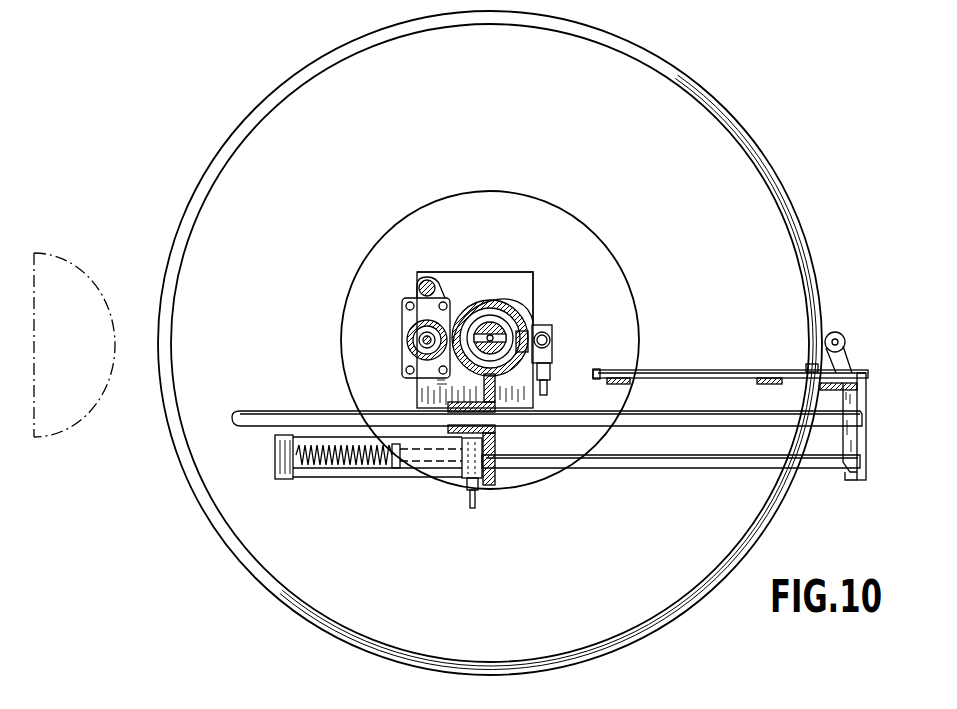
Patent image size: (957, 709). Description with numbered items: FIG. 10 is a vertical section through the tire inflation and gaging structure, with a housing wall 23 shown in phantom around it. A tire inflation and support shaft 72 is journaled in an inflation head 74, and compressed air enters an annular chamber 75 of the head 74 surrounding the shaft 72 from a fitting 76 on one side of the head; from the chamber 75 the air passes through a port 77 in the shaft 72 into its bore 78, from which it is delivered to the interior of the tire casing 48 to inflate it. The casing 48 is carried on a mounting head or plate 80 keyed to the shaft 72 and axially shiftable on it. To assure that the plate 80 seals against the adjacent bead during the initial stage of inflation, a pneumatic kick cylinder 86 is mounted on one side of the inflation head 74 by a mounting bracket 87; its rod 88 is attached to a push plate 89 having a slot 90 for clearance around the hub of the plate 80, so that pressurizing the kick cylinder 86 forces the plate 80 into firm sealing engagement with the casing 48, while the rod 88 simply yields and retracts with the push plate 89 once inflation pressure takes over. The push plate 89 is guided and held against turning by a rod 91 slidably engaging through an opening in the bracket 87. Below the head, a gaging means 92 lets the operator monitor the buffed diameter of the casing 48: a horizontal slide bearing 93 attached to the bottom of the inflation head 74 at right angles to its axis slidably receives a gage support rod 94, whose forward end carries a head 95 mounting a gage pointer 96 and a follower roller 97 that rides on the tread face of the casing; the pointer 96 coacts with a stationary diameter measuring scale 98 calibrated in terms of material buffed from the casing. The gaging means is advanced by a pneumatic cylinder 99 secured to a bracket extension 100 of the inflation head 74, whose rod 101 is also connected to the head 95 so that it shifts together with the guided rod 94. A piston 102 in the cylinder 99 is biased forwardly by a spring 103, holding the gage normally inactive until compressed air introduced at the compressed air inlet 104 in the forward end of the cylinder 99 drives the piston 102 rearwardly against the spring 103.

The housing wall (phantom) 23 is at (72, 264).
The tire casing 48 is at (657, 622).
The mounting head or plate 80 is at (606, 271).
The push plate 89 is at (447, 283).
The rod 91 is at (419, 287).
The mounting bracket 87 is at (402, 320).
The pneumatic kick cylinder 86 is at (406, 341).
The rod 88 is at (423, 345).
The port 77 is at (473, 300).
The annular chamber 75 is at (490, 312).
The tire inflation and support shaft 72 is at (507, 322).
The bore 78 is at (532, 277).
The inflation head 74 is at (540, 320).
The fitting 76 is at (553, 343).
The slot 90 is at (536, 400).
The diameter measuring scale 98 is at (705, 370).
The gage pointer 96 is at (810, 366).
The follower roller 97 is at (836, 332).
The gaging means 92 is at (868, 401).
The head 95 is at (867, 431).
The gage support rod 94 is at (645, 417).
The rod 101 is at (620, 467).
The bracket extension 100 is at (495, 484).
The horizontal slide bearing 93 is at (458, 478).
The compressed air inlet 104 is at (470, 500).
The piston 102 is at (390, 478).
The pneumatic cylinder 99 is at (345, 478).
The spring 103 is at (293, 478).